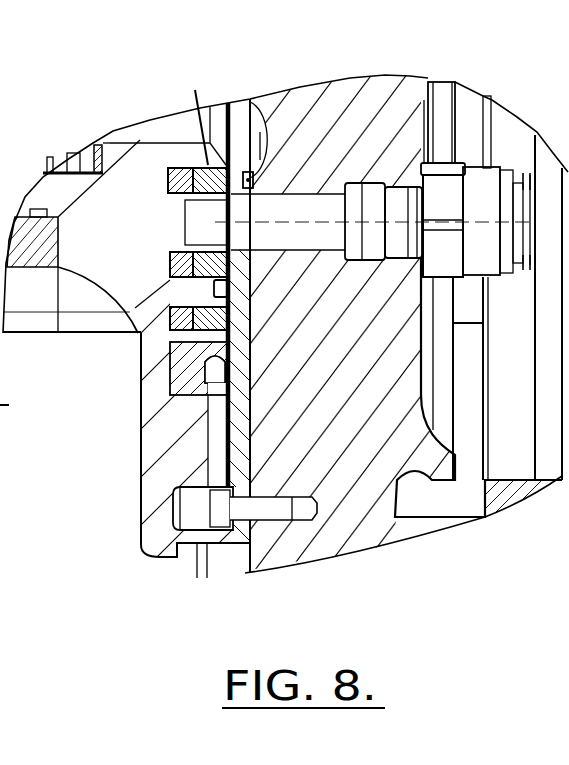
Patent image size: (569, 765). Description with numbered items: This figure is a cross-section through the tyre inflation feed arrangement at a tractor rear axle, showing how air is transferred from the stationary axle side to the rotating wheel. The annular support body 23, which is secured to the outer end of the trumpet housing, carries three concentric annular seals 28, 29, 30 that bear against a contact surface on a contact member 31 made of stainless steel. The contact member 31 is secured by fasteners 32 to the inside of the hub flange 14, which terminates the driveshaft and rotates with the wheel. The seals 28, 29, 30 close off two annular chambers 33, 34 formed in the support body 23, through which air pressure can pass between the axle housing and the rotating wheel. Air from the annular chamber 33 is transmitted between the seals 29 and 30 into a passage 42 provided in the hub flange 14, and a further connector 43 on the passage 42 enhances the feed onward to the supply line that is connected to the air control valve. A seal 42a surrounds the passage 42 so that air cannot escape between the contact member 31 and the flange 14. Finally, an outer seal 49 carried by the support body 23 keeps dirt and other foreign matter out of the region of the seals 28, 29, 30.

The hub flange 14 is at (310, 133).
The annular support body 23 is at (163, 490).
The annular seal 28 is at (230, 340).
The annular seal 29 is at (192, 252).
The annular seal 30 is at (164, 291).
The contact member 31 is at (243, 420).
The fasteners 32 is at (262, 502).
The annular chamber 33 is at (212, 223).
The annular chamber 34 is at (235, 305).
The passage 42 is at (298, 230).
The seal 42a is at (252, 180).
The connector 43 is at (482, 200).
The outer seal 49 is at (175, 380).